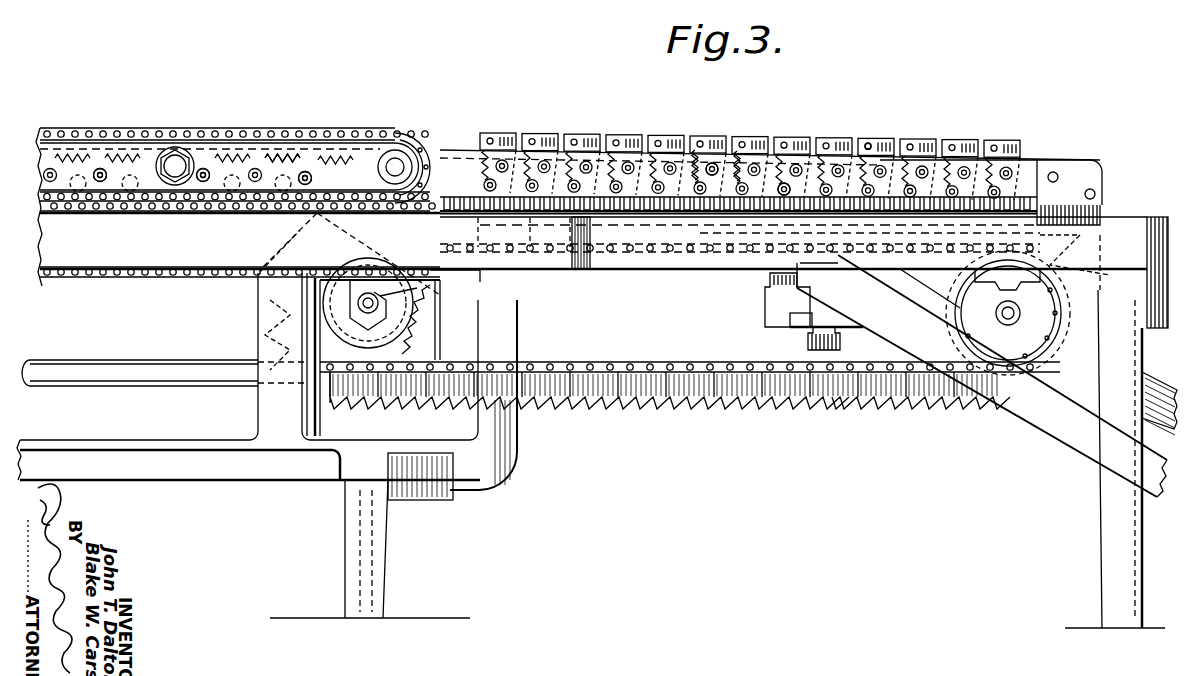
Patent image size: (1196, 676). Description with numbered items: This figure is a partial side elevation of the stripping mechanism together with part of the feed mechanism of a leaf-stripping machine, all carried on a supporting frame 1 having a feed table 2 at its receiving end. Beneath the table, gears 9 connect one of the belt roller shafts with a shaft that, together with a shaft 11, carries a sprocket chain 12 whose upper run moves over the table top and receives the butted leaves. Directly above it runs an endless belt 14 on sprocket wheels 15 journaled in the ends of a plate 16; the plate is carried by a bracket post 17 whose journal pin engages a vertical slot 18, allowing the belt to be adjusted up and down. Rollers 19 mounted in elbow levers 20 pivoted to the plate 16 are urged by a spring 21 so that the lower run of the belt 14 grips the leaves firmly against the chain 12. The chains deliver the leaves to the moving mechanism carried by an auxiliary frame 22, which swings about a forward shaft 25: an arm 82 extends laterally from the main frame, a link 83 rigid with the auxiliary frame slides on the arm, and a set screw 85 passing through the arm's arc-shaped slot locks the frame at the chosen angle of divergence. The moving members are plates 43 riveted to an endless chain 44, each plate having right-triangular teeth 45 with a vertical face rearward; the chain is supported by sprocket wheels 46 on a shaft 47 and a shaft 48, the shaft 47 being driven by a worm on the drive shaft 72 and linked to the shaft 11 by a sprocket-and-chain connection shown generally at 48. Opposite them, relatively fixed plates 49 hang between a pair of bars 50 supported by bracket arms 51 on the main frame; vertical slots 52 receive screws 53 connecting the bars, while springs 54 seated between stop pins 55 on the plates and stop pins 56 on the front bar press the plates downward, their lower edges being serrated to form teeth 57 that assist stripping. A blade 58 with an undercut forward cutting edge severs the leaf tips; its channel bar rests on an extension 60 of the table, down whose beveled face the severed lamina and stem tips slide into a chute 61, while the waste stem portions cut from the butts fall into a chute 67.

The supporting frame 1 is at (305, 485).
The feed table 2 is at (150, 250).
The gears 9 is at (425, 297).
The shaft 11 is at (759, 232).
The sprocket chain 12 is at (215, 279).
The endless belt 14 is at (248, 128).
The sprocket wheels 15 is at (393, 145).
The plate 16 is at (290, 142).
The bracket post 17 is at (166, 152).
The slot 18 is at (182, 147).
The rollers 19 is at (358, 140).
The elbow levers 20 is at (320, 142).
The spring 21 is at (238, 122).
The auxiliary frame 22 is at (765, 295).
The forward shaft 25 is at (455, 340).
The plates 43 is at (662, 220).
The endless chain 44 is at (660, 362).
The teeth 45 is at (830, 407).
The sprocket wheels 46 is at (432, 318).
The shaft 47 is at (370, 300).
The shaft 48 is at (950, 335).
The plates 49 is at (570, 133).
The bars 50 is at (1025, 160).
The bracket arms 51 is at (1100, 205).
The vertical slots 52 is at (648, 168).
The screws 53 is at (785, 190).
The springs 54 is at (866, 144).
The stop pins 55 is at (745, 150).
The stop pins 56 is at (690, 185).
The teeth 57 is at (700, 253).
The blade 58 is at (875, 226).
The extension 60 is at (1108, 232).
The chute 61 is at (1058, 435).
The chute 67 is at (1152, 378).
The drive shaft 72 is at (113, 360).
The arm 82 is at (792, 322).
The link 83 is at (768, 310).
The set screw 85 is at (846, 342).